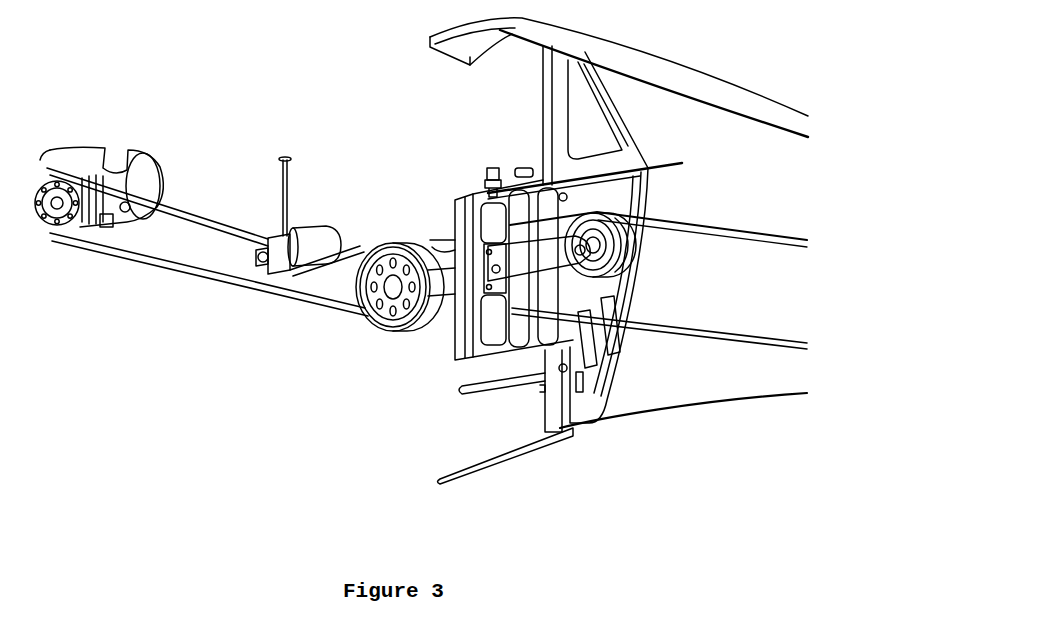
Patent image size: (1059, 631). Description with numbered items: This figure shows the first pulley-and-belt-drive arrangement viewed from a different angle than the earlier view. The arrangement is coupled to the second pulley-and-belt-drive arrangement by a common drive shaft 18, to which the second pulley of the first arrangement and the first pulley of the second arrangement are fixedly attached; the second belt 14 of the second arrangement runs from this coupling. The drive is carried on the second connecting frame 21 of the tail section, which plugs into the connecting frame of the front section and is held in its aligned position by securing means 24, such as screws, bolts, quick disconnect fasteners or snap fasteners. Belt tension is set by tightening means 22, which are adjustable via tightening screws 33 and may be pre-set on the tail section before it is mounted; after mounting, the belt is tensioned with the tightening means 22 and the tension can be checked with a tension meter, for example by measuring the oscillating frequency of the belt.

The second belt 14 is at (728, 336).
The common drive shaft 18 is at (393, 284).
The second connecting frame 21 is at (575, 432).
The tightening means 22 is at (337, 228).
The securing means 24 is at (682, 163).
The tightening screw 33 is at (284, 192).